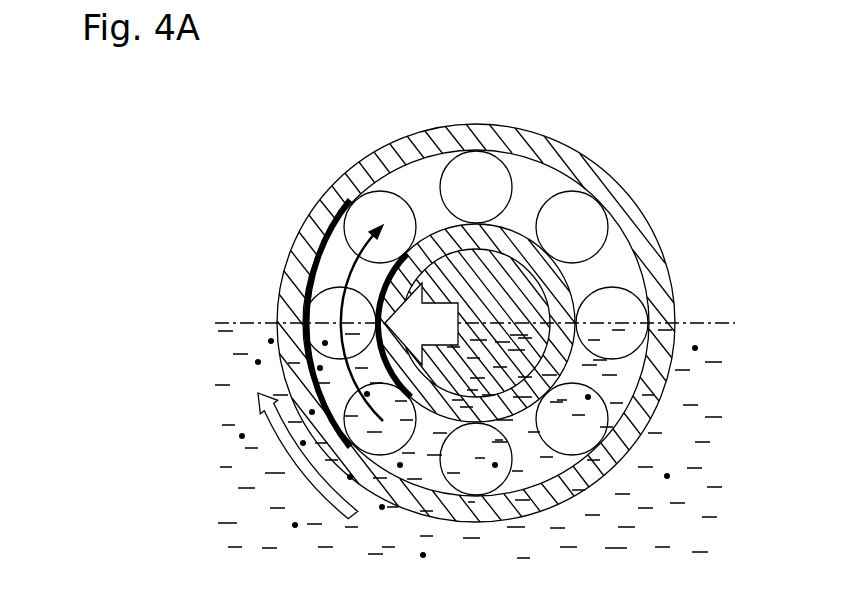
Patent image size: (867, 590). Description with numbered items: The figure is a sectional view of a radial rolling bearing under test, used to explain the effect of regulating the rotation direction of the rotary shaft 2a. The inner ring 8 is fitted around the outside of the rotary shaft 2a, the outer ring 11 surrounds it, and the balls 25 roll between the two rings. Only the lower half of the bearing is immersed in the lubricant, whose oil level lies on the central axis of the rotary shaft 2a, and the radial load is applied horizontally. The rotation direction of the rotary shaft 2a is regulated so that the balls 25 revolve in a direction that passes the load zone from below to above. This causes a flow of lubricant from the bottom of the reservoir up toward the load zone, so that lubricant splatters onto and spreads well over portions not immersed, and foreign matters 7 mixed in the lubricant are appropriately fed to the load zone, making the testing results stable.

The rotary shaft 2a is at (440, 442).
The foreign matter 7 is at (325, 343).
The inner ring 8 is at (513, 248).
The outer ring 11 is at (657, 300).
The ball 25 is at (470, 175).